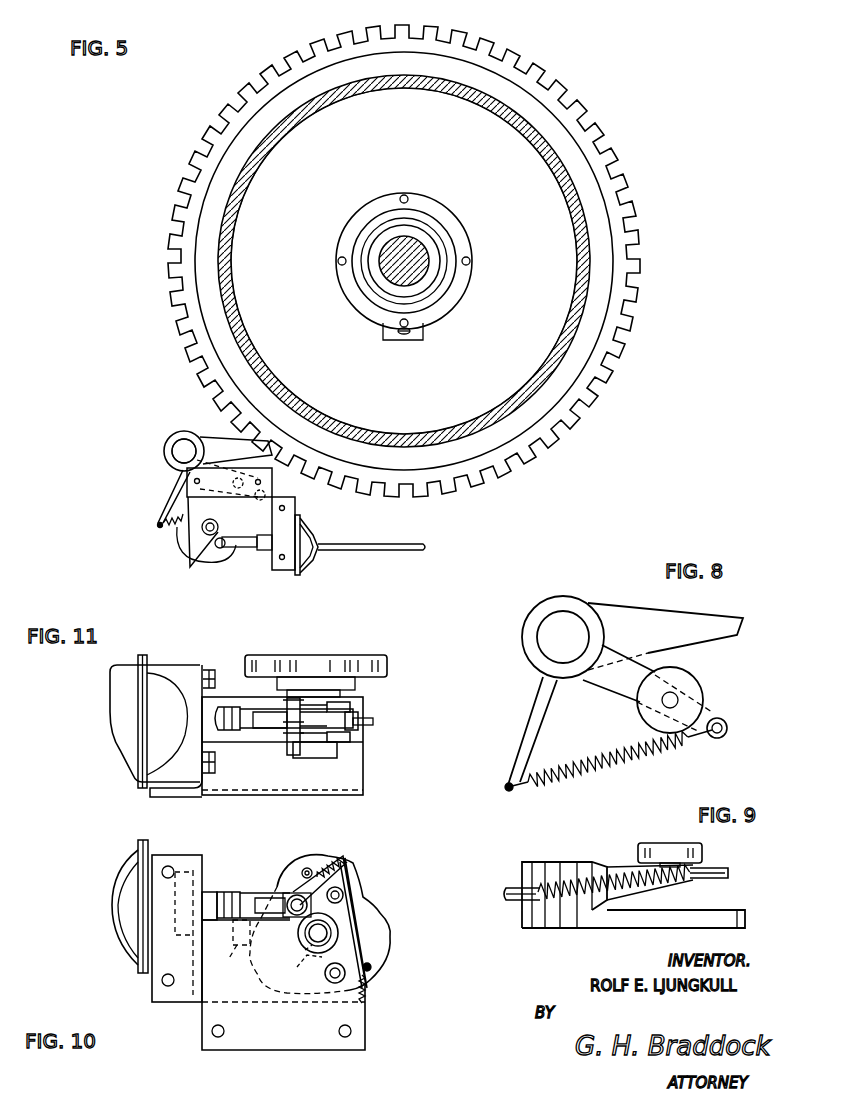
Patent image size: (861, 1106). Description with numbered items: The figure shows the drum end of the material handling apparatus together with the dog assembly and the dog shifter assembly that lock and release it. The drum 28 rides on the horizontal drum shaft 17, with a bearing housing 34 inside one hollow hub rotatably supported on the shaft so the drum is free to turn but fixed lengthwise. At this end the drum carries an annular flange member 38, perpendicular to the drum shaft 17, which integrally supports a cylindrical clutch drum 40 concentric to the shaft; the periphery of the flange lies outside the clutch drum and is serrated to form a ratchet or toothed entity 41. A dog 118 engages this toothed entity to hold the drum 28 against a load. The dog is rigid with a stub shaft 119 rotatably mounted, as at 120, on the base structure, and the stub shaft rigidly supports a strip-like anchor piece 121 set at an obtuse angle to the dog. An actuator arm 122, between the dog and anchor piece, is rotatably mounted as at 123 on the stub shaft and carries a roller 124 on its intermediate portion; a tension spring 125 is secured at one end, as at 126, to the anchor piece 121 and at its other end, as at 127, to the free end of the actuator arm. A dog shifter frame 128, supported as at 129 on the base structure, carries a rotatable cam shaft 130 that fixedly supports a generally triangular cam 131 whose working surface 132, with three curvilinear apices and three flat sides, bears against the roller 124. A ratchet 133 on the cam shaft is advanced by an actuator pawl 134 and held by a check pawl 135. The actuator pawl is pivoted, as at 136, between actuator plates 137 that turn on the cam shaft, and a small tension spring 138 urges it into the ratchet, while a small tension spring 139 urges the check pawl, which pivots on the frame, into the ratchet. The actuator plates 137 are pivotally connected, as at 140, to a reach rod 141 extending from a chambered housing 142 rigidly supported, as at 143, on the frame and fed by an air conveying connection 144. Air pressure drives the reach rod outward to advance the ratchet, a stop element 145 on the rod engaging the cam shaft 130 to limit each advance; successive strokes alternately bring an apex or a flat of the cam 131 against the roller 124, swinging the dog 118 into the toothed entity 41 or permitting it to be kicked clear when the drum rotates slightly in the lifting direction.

In FIG. 5, the drum shaft 17 is at (418, 254).
In FIG. 5, the drum 28 is at (558, 265).
In FIG. 5, the bearing housing 34 is at (455, 293).
In FIG. 5, the annular flange member 38 is at (298, 185).
In FIG. 5, the cylindrical clutch drum 40 is at (519, 123).
In FIG. 5, the ratchet or toothed entity 41 is at (208, 358).
In FIG. 5, the dog 118 is at (223, 443).
In FIG. 8, the dog 118 is at (722, 625).
In FIG. 9, the dog 118 is at (698, 917).
In FIG. 5, the stub shaft 119 is at (180, 450).
In FIG. 8, the stub shaft 119 is at (552, 645).
In FIG. 5, the rotatable mounting 120 is at (167, 462).
In FIG. 8, the rotatable mounting 120 is at (527, 637).
In FIG. 5, the anchor piece 121 is at (168, 495).
In FIG. 8, the anchor piece 121 is at (528, 725).
In FIG. 9, the anchor piece 121 is at (513, 897).
In FIG. 5, the actuator arm 122 is at (267, 489).
In FIG. 8, the actuator arm 122 is at (722, 718).
In FIG. 9, the actuator arm 122 is at (727, 872).
In FIG. 9, the rotatable mounting 123 is at (567, 867).
In FIG. 8, the roller 124 is at (682, 682).
In FIG. 9, the roller 124 is at (668, 850).
In FIG. 5, the tension spring 125 is at (172, 523).
In FIG. 8, the tension spring 125 is at (605, 755).
In FIG. 9, the tension spring 125 is at (623, 872).
In FIG. 8, the spring securing point 126 is at (505, 790).
In FIG. 9, the spring securing point 126 is at (513, 885).
In FIG. 8, the spring securing point 127 is at (713, 737).
In FIG. 9, the spring securing point 127 is at (723, 868).
In FIG. 5, the dog shifter frame 128 is at (283, 518).
In FIG. 11, the dog shifter frame 128 is at (357, 757).
In FIG. 10, the dog shifter frame 128 is at (357, 1017).
In FIG. 5, the frame support 129 is at (278, 471).
In FIG. 10, the frame support 129 is at (212, 1031).
In FIG. 11, the cam shaft 130 is at (315, 755).
In FIG. 10, the cam shaft 130 is at (322, 935).
In FIG. 5, the cam 131 is at (227, 560).
In FIG. 11, the cam 131 is at (327, 660).
In FIG. 10, the cam 131 is at (378, 947).
In FIG. 11, the working surface 132 is at (385, 660).
In FIG. 10, the working surface 132 is at (382, 915).
In FIG. 10, the ratchet 133 is at (305, 956).
In FIG. 11, the actuator pawl 134 is at (358, 715).
In FIG. 10, the actuator pawl 134 is at (348, 912).
In FIG. 11, the check pawl 135 is at (373, 722).
In FIG. 10, the check pawl 135 is at (371, 967).
In FIG. 10, the pawl pivot 136 is at (348, 877).
In FIG. 5, the actuator plates 137 is at (198, 557).
In FIG. 11, the actuator plates 137 is at (353, 705).
In FIG. 10, the actuator plates 137 is at (298, 895).
In FIG. 10, the small tension spring 138 is at (310, 870).
In FIG. 10, the small tension spring 139 is at (367, 980).
In FIG. 11, the pivotal connection 140 is at (292, 742).
In FIG. 10, the pivotal connection 140 is at (283, 898).
In FIG. 11, the reach rod 141 is at (247, 725).
In FIG. 10, the reach rod 141 is at (233, 892).
In FIG. 5, the chambered housing 142 is at (310, 560).
In FIG. 11, the chambered housing 142 is at (130, 750).
In FIG. 10, the chambered housing 142 is at (130, 927).
In FIG. 11, the housing support 143 is at (212, 770).
In FIG. 10, the housing support 143 is at (210, 902).
In FIG. 5, the air conveying connection 144 is at (377, 550).
In FIG. 10, the stop element 145 is at (229, 951).